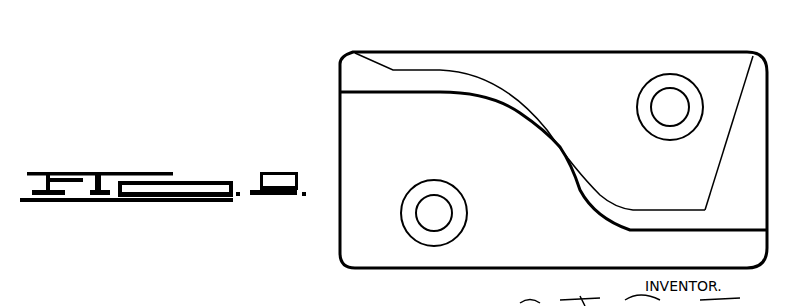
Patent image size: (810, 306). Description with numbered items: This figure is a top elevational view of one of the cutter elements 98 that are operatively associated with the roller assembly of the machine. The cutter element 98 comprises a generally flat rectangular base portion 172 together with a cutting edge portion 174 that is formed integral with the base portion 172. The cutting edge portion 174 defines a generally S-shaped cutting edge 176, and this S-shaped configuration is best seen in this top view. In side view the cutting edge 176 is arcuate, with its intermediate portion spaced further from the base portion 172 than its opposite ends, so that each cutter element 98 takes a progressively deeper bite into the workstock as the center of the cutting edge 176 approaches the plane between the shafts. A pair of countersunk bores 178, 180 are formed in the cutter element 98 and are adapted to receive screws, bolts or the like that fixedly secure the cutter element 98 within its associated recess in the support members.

The cutter element 98 is at (497, 153).
The base portion 172 is at (365, 243).
The cutting edge portion 174 is at (557, 90).
The cutting edge 176 is at (547, 130).
The countersunk bore 178 is at (438, 197).
The countersunk bore 180 is at (663, 117).